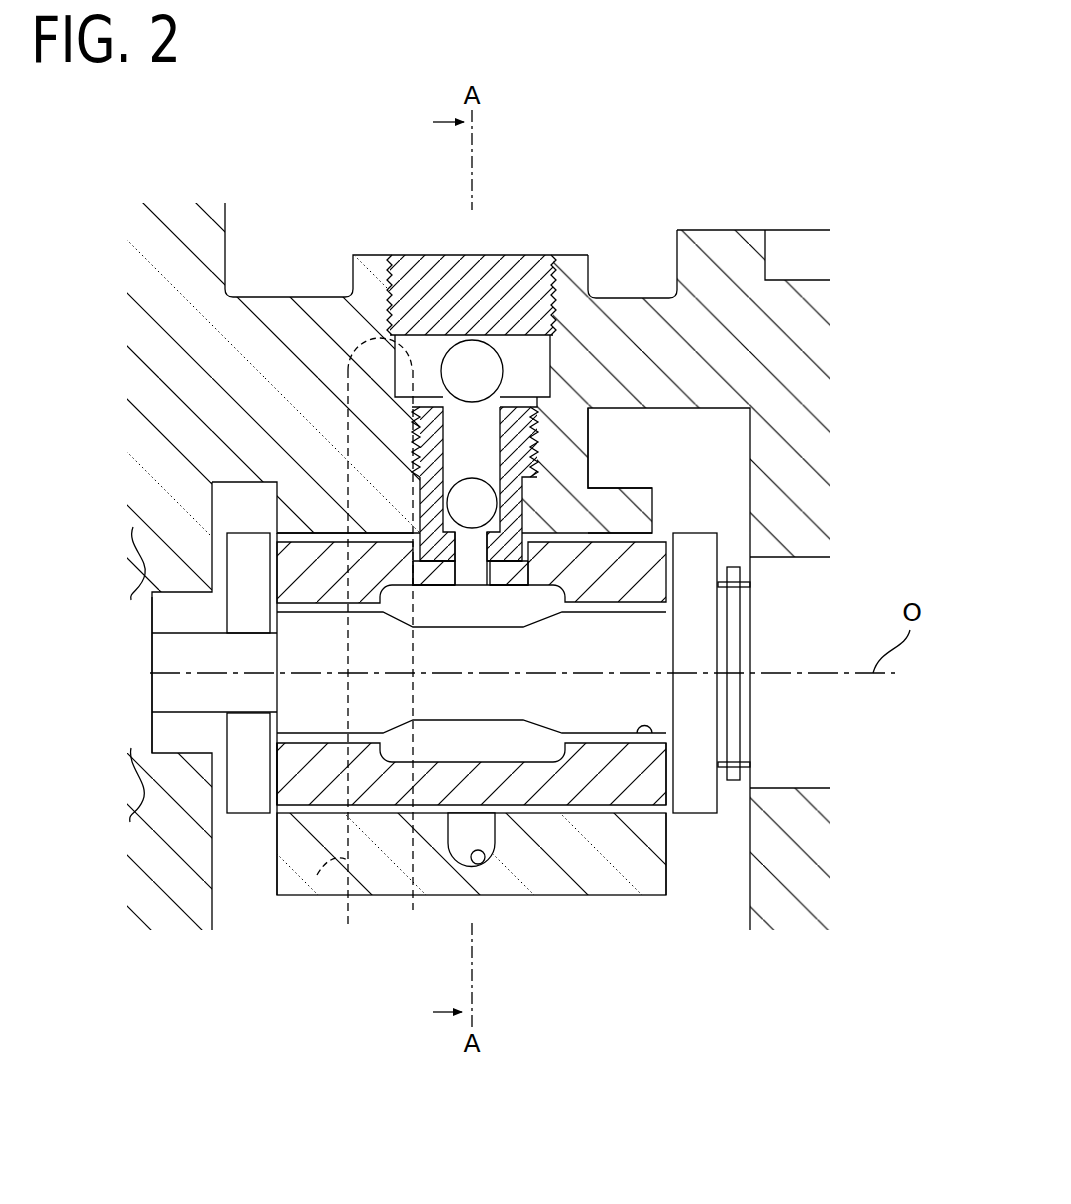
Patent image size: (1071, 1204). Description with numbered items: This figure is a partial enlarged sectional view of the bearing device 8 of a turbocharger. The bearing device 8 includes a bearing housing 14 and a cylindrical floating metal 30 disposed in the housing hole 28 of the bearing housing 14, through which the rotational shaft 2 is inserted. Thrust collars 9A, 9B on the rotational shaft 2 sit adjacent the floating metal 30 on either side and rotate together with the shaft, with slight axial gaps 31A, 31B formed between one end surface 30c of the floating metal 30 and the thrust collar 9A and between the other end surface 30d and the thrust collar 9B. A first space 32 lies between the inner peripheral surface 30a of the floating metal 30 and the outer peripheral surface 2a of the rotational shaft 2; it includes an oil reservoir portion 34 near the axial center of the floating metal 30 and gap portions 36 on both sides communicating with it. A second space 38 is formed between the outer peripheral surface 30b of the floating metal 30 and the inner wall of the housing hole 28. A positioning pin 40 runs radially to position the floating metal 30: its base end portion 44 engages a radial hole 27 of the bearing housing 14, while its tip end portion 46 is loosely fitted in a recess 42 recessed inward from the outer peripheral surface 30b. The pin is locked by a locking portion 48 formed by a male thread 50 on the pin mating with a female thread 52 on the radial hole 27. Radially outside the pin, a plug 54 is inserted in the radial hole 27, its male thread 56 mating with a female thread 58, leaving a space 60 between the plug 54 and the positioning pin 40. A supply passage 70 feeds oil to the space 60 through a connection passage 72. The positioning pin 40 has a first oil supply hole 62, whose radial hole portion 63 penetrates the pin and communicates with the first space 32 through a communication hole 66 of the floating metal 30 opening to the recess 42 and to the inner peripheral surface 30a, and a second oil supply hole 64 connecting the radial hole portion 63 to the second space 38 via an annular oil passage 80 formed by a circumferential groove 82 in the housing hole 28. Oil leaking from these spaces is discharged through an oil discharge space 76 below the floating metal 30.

The rotational shaft 2 is at (305, 735).
The outer peripheral surface of the rotational shaft 2a is at (645, 737).
The bearing device 8 is at (880, 172).
The thrust collar 9A is at (247, 815).
The thrust collar 9B is at (695, 793).
The bearing housing 14 is at (718, 247).
The radial hole 27 is at (593, 290).
The housing hole 28 is at (297, 533).
The floating metal 30 is at (471, 912).
The inner peripheral surface of the floating metal 30a is at (666, 820).
The outer peripheral surface of the floating metal 30b is at (652, 497).
The end surface of the floating metal 30c is at (275, 775).
The end surface of the floating metal 30d is at (667, 777).
The axial gap 31A is at (285, 566).
The axial gap 31B is at (667, 568).
The first space 32 is at (425, 997).
The oil reservoir portion 34 is at (445, 745).
The gap portion 36 is at (367, 897).
The second space 38 is at (568, 805).
The positioning pin 40 is at (412, 528).
The recess 42 is at (588, 463).
The base end portion 44 is at (397, 413).
The tip end portion 46 is at (315, 548).
The locking portion 48 is at (491, 339).
The male thread 50 is at (513, 565).
The female thread 52 is at (537, 455).
The plug 54 is at (433, 239).
The male thread 56 is at (392, 303).
The female thread 58 is at (398, 268).
The space 60 is at (513, 360).
The first oil supply hole 62 is at (470, 573).
The radial hole portion 63 is at (470, 540).
The second oil supply hole 64 is at (470, 340).
The communication hole 66 is at (473, 578).
The supply passage 70 is at (345, 862).
The connection passage 72 is at (415, 330).
The oil discharge space 76 is at (512, 949).
The annular oil passage 80 is at (462, 860).
The circumferential groove 82 is at (481, 864).